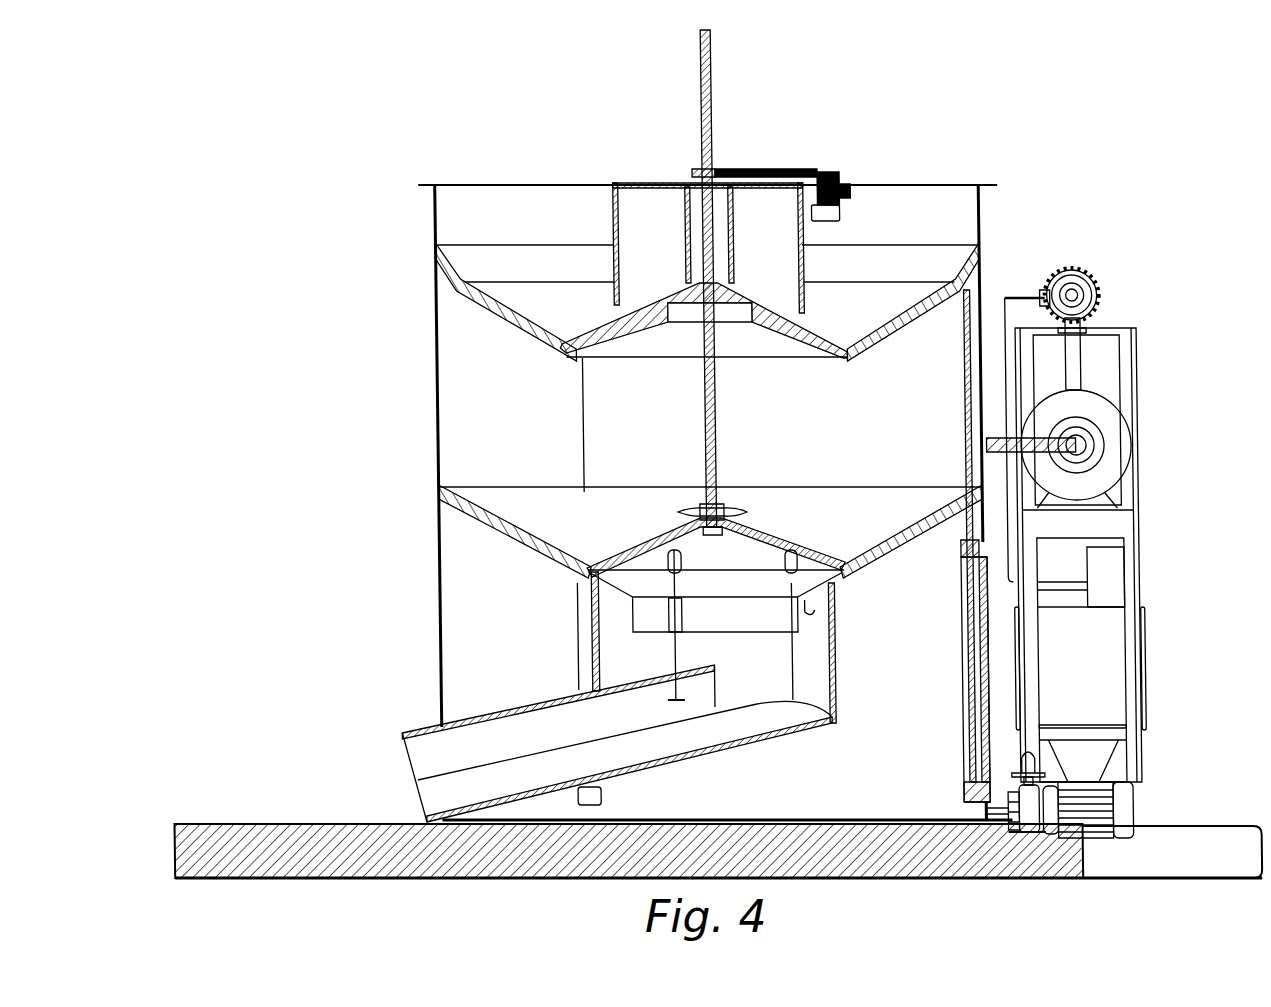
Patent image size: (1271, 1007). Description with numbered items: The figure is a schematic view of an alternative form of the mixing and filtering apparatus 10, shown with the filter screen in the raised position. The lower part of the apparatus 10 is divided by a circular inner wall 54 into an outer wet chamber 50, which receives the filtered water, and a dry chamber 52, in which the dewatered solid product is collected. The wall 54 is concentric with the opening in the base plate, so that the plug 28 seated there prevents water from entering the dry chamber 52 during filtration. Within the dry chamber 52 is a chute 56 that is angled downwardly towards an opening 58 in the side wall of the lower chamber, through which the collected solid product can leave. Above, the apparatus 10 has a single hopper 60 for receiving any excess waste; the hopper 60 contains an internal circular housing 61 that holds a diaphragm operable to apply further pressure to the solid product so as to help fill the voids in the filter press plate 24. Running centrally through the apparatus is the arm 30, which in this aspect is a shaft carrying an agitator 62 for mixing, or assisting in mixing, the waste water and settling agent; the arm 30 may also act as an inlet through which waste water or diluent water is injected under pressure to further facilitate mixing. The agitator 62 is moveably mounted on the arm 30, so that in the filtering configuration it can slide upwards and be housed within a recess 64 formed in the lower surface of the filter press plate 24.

The apparatus 10 is at (1171, 202).
The filter press plate 24 is at (811, 316).
The plug 28 is at (772, 535).
The arm 30 is at (717, 397).
The outer wet chamber 50 is at (912, 627).
The dry chamber 52 is at (765, 671).
The circular inner wall 54 is at (833, 670).
The chute 56 is at (610, 731).
The opening 58 is at (390, 767).
The hopper 60 is at (642, 196).
The internal circular housing 61 is at (720, 203).
The agitator 62 is at (739, 508).
The recess 64 is at (686, 312).